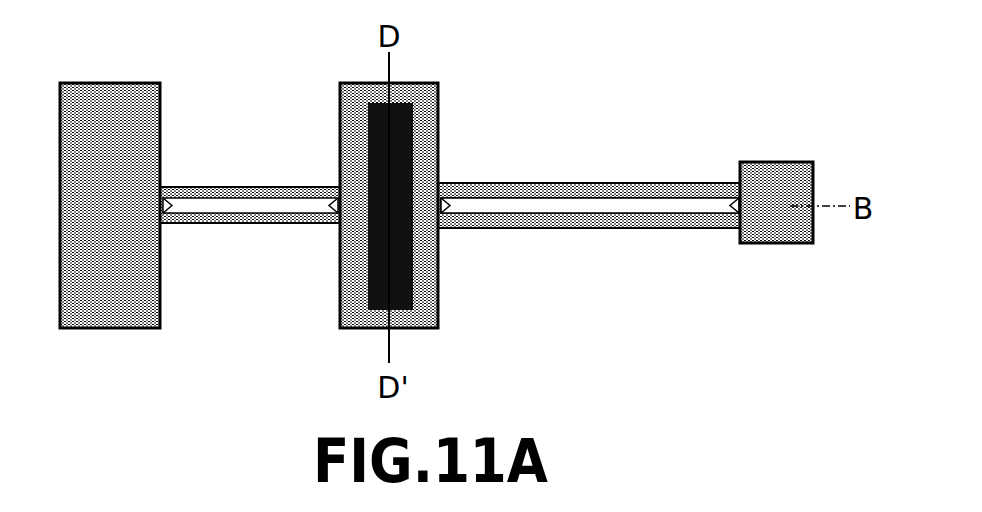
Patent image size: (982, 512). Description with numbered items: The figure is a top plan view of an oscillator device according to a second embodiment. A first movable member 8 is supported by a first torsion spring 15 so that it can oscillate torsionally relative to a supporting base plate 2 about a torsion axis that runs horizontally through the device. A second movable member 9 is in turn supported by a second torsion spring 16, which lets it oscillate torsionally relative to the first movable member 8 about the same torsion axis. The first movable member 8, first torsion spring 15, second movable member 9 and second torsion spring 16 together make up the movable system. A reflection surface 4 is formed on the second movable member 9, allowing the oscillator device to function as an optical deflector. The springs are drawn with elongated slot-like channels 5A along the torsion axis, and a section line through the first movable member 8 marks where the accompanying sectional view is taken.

The reflection surface 4 is at (100, 90).
The second movable member 9 is at (160, 308).
The second torsion spring 16 is at (242, 227).
The flow channel 5A is at (258, 200).
The first movable member 8 is at (440, 310).
The first torsion spring 15 is at (582, 230).
The supporting base plate 2 is at (772, 173).